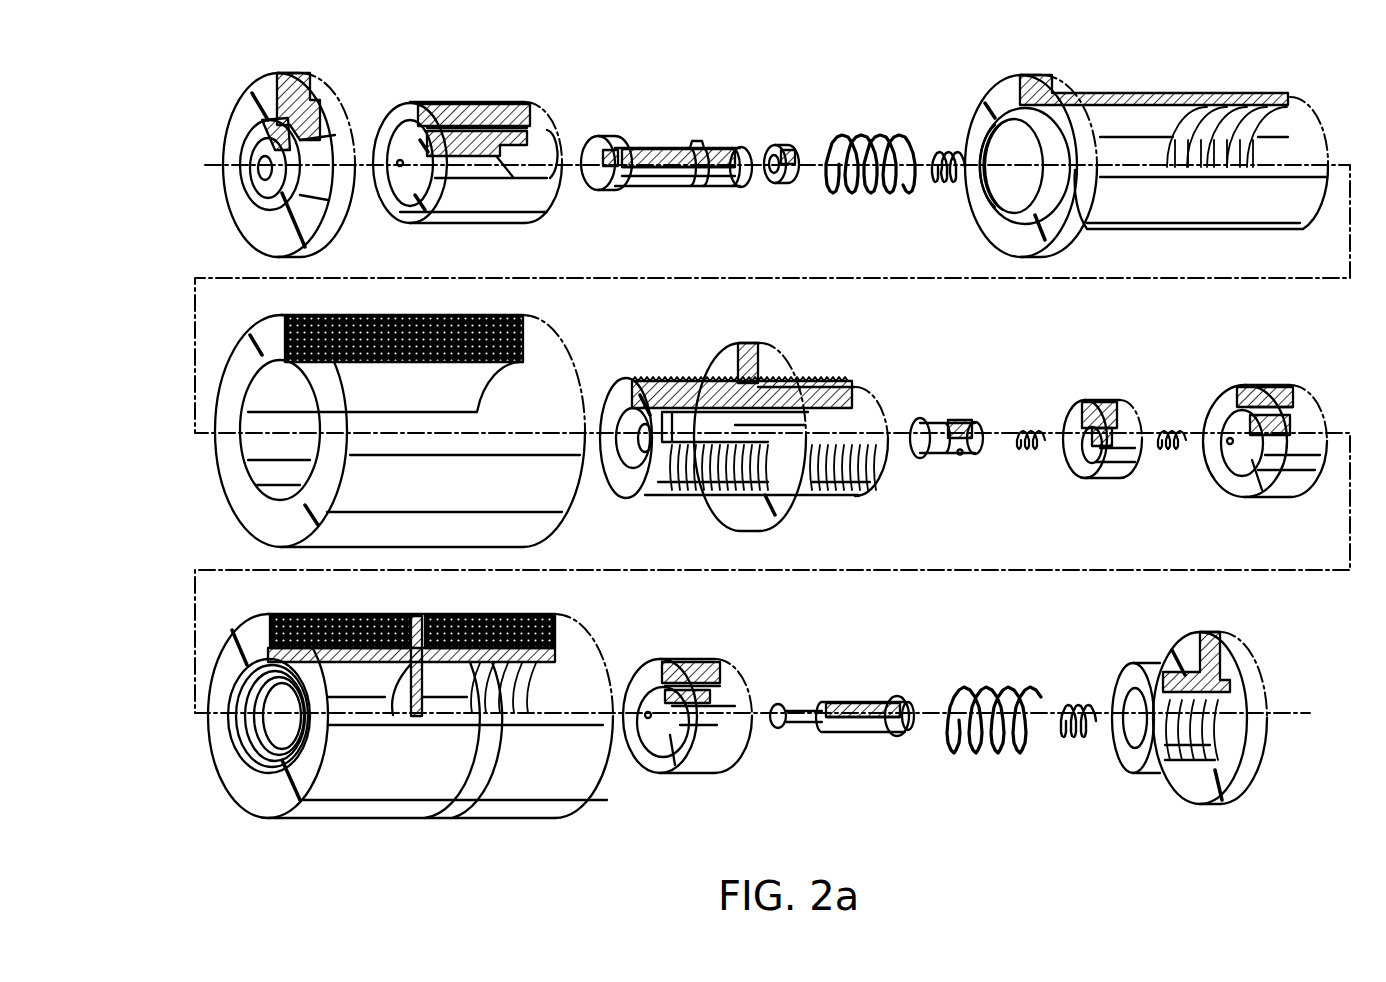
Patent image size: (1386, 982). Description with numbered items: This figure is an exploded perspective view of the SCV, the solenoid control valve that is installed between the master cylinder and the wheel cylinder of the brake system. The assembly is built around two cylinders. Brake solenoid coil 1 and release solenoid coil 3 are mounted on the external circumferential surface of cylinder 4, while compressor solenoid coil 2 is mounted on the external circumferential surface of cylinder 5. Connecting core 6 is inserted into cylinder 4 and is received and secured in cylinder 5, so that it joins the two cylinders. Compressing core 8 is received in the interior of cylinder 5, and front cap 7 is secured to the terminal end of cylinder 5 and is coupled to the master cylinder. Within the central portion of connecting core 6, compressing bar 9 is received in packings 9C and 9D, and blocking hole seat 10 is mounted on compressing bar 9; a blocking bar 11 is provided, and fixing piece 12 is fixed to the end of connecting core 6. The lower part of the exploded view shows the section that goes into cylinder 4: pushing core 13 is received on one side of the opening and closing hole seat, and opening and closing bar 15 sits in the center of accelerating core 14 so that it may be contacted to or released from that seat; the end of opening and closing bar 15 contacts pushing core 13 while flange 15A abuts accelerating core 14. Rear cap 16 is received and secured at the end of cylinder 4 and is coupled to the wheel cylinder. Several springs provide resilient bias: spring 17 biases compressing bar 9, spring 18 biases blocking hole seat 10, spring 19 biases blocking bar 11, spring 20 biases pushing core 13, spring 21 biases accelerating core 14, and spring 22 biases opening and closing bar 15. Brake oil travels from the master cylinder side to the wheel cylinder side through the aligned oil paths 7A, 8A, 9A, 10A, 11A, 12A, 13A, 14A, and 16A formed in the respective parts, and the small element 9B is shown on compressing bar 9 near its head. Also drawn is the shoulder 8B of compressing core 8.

The brake solenoid coil 1 is at (410, 699).
The compressor solenoid coil 2 is at (227, 455).
The release solenoid coil 3 is at (543, 615).
The cylinder 4 is at (563, 650).
The cylinder 5 is at (1037, 72).
The connecting core 6 is at (657, 382).
The front cap 7 is at (318, 146).
The oil path 7A is at (323, 137).
The compressing core 8 is at (477, 139).
The oil path 8A is at (488, 122).
The bushing shoulder 8B is at (530, 110).
The compressing bar 9 is at (678, 123).
The oil path 9A is at (658, 147).
The piston head 9B is at (620, 147).
The packing 9C is at (698, 147).
The packing 9D is at (740, 147).
The blocking hole seat 10 is at (808, 126).
The oil path 10A is at (797, 158).
The blocking bar 11 is at (946, 432).
The oil path 11A is at (943, 418).
The fixing piece 12 is at (1078, 408).
The oil path 12A is at (1108, 405).
The pushing core 13 is at (1252, 415).
The oil path 13A is at (1258, 397).
The accelerating core 14 is at (690, 688).
The oil path 14A is at (715, 662).
The opening and closing bar 15 is at (842, 680).
The flange 15A is at (897, 697).
The rear cap 16 is at (1177, 700).
The oil path 16A is at (1165, 662).
The spring 17 is at (858, 140).
The spring 18 is at (937, 147).
The spring 19 is at (1028, 450).
The spring 20 is at (1170, 430).
The spring 21 is at (983, 687).
The spring 22 is at (1072, 705).